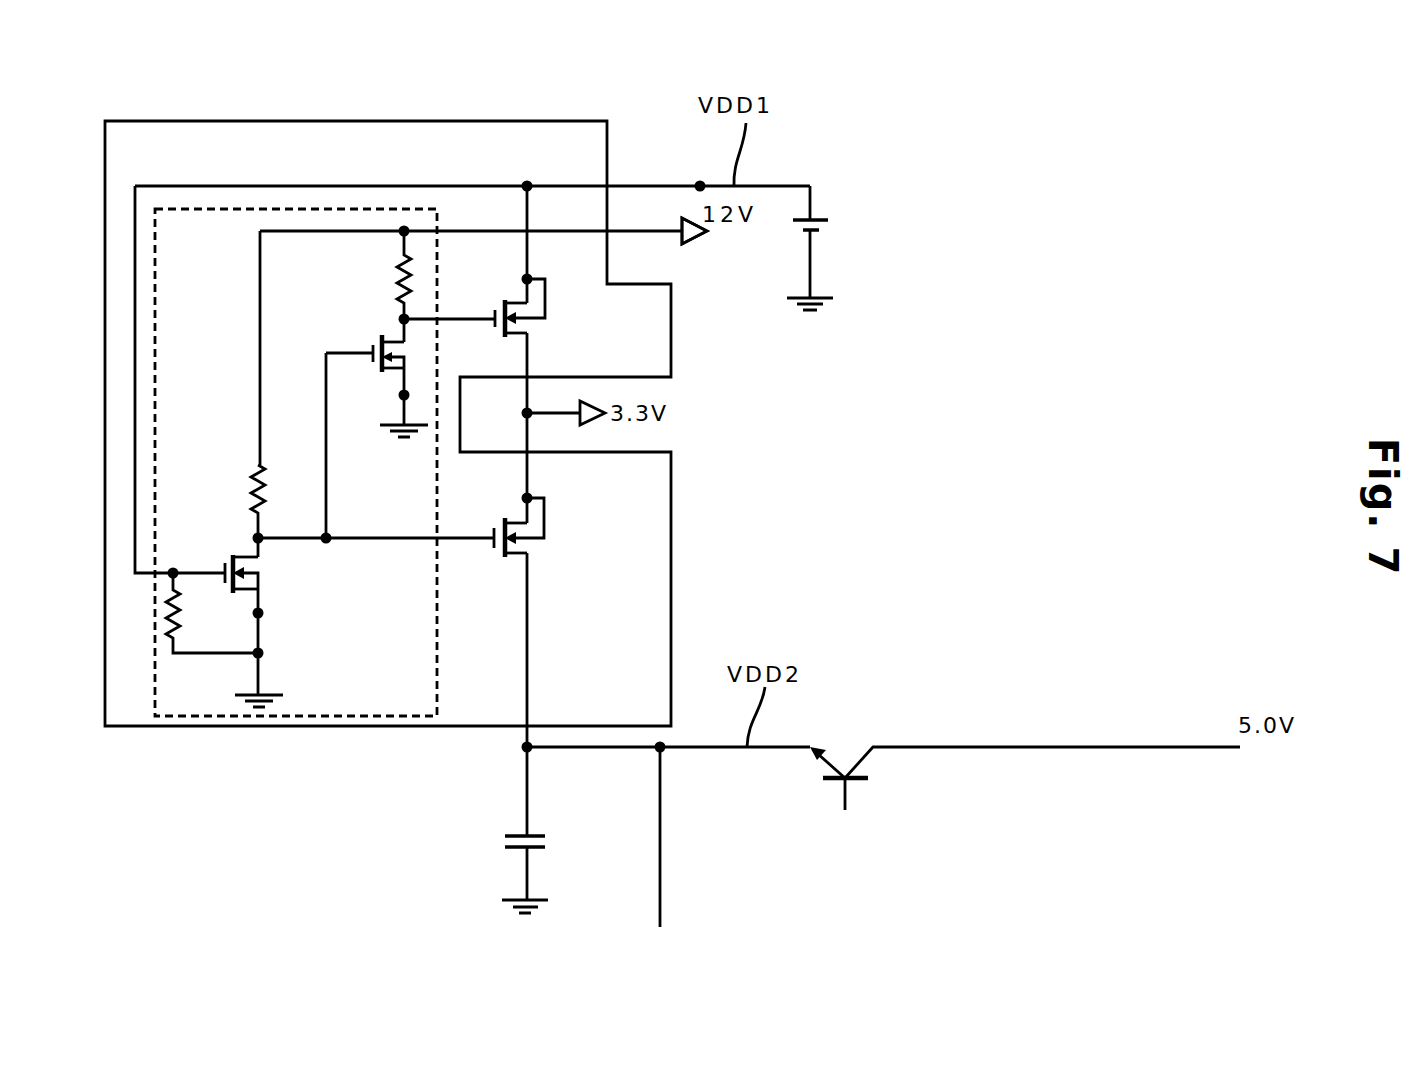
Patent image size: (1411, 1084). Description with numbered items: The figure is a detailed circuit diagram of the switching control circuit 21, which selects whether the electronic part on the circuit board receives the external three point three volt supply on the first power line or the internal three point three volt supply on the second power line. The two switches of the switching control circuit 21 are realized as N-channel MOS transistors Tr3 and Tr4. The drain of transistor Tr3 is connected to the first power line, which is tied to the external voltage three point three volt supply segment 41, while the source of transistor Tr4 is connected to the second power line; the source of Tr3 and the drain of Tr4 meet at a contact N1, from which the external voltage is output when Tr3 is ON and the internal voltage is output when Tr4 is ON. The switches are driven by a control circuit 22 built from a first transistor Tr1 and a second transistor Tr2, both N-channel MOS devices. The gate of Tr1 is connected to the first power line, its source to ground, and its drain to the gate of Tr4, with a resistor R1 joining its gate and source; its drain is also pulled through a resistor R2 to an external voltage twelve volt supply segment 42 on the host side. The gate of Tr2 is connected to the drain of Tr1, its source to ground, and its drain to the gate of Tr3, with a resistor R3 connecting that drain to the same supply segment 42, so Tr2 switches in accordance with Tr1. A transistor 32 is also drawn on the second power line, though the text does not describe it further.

The switching control circuit 21 is at (712, 438).
The control circuit 22 is at (220, 716).
The transistor 32 is at (872, 753).
The external voltage 3.3V supply segment 41 is at (823, 217).
The external voltage 12V supply segment 42 is at (702, 233).
The resistor R1 is at (168, 603).
The resistor R2 is at (250, 475).
The resistor R3 is at (395, 283).
The first transistor Tr1 is at (263, 582).
The second transistor Tr2 is at (375, 348).
The transistor Tr3 (first switch) Tr3 is at (547, 320).
The transistor Tr4 (second switch) Tr4 is at (547, 538).
The contact N1 is at (535, 418).